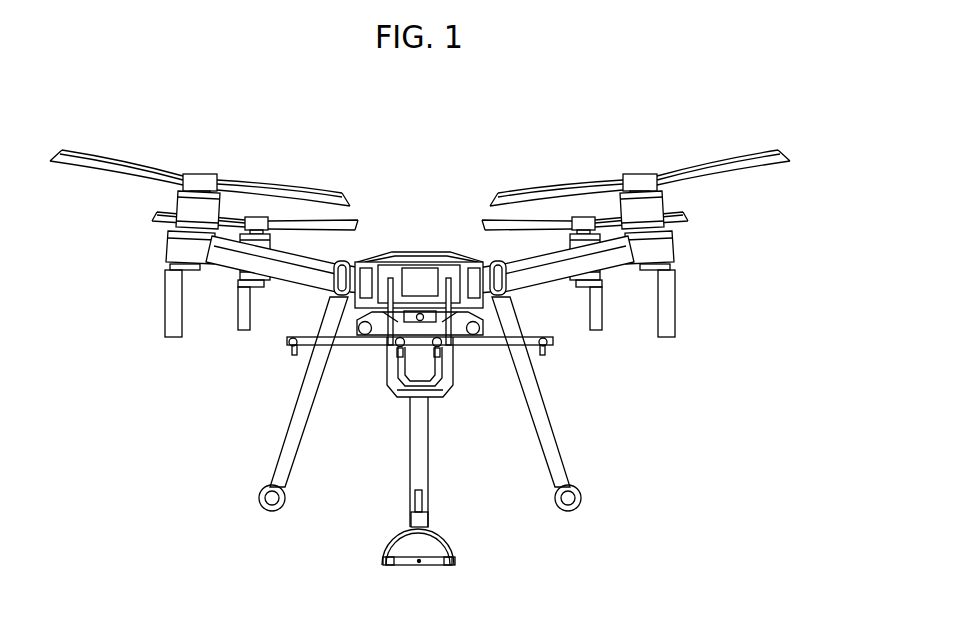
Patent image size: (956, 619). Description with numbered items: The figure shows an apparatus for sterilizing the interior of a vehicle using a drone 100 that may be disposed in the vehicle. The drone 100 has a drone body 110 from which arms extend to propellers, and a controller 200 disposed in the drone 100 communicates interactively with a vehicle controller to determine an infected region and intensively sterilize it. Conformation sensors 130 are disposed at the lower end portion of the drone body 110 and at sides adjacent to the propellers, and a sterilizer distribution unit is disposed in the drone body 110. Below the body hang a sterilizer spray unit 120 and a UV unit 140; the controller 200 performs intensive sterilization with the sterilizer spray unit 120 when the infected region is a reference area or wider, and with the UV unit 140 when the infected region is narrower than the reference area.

The drone 100 is at (285, 122).
The drone body 110 is at (417, 253).
The sterilizer spray unit 120 is at (738, 167).
The conformation sensors 130 is at (660, 331).
The UV unit 140 is at (450, 542).
The controller 200 is at (428, 276).